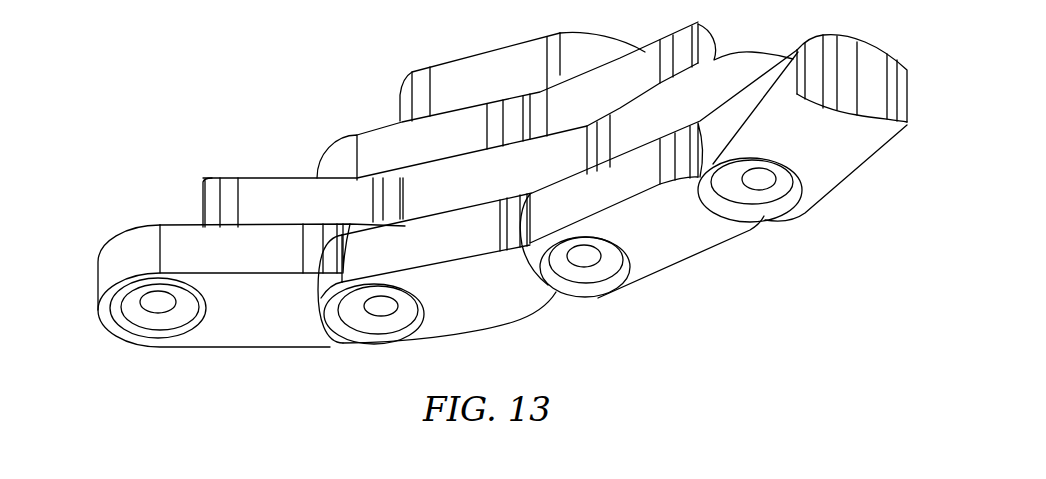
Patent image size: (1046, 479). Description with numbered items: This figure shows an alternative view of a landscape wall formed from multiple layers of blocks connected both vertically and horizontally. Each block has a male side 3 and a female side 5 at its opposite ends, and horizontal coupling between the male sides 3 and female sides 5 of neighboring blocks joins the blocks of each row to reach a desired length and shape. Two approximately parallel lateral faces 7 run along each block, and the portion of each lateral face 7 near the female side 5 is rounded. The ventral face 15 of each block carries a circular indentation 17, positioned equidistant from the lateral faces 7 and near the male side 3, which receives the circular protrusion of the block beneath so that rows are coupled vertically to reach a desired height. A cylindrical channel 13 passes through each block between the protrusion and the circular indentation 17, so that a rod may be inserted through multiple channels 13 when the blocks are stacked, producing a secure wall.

The male side 3 is at (97, 267).
The female side 5 is at (860, 77).
The lateral face 7 is at (780, 83).
The cylindrical channel 13 is at (767, 183).
The ventral face 15 is at (853, 147).
The circular indentation 17 is at (602, 268).